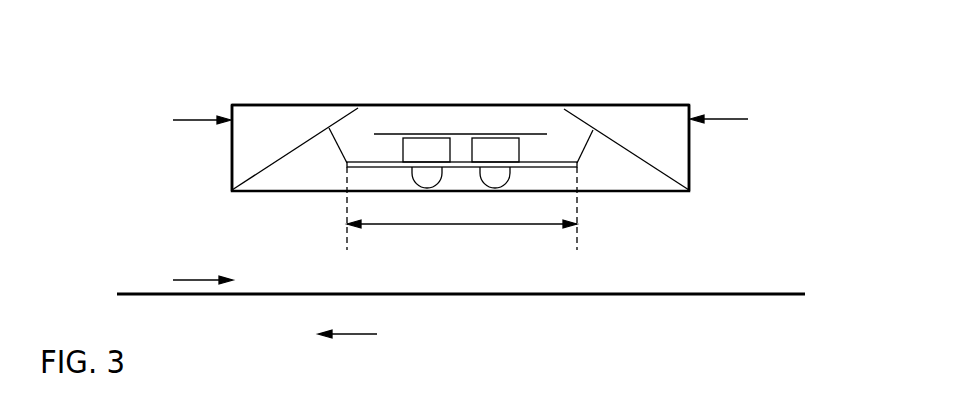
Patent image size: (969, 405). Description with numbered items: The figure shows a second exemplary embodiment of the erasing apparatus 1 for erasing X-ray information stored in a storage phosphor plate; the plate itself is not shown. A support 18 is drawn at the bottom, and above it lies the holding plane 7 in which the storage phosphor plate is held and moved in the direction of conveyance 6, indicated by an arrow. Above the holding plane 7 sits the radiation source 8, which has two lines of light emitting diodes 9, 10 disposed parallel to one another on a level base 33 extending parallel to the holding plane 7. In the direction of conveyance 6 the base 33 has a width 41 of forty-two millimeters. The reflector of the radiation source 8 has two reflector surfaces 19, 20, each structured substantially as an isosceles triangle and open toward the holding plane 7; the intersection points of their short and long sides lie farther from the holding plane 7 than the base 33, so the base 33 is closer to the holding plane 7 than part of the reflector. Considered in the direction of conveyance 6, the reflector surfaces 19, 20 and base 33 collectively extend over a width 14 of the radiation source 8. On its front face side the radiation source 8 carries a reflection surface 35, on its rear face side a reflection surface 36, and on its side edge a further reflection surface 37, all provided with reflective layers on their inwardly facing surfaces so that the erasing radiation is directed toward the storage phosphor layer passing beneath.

The erasing apparatus 1 is at (214, 64).
The direction of conveyance 6 is at (357, 335).
The holding plane 7 is at (197, 280).
The radiation source 8 is at (655, 105).
The line of light emitting diodes 9 is at (437, 145).
The line of light emitting diodes 10 is at (487, 145).
The width of the radiation source 14 is at (728, 119).
The support 18 is at (768, 293).
The reflector surface 19 is at (280, 158).
The reflector surface 20 is at (623, 143).
The base 33 is at (565, 162).
The reflection surface 35 is at (230, 157).
The reflection surface 36 is at (692, 168).
The further reflection surface 37 is at (331, 98).
The width of the base 41 is at (442, 224).